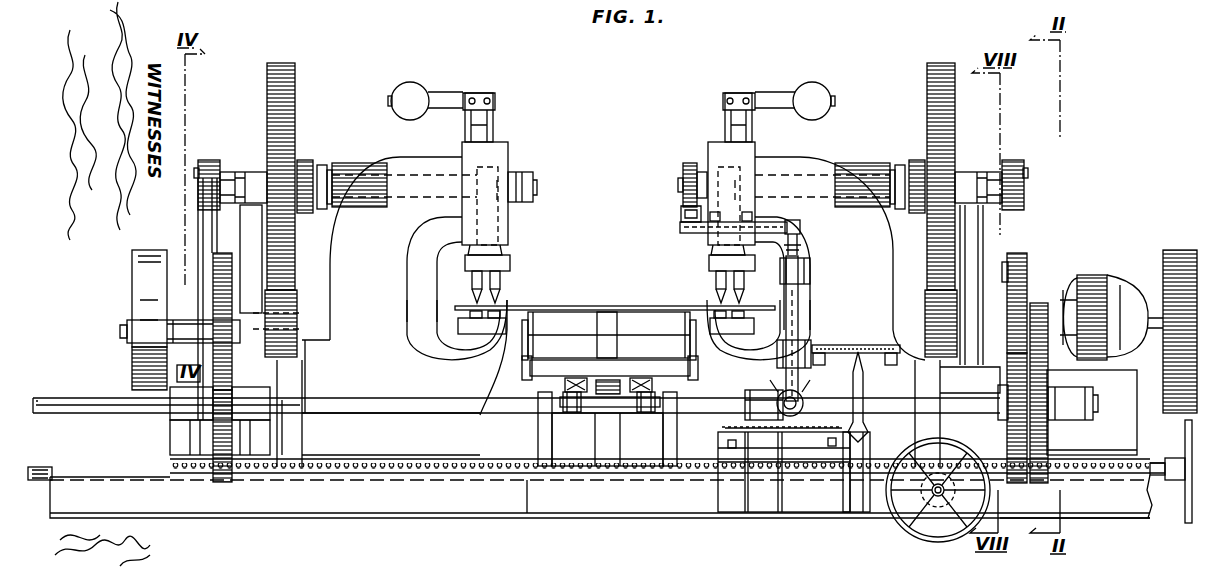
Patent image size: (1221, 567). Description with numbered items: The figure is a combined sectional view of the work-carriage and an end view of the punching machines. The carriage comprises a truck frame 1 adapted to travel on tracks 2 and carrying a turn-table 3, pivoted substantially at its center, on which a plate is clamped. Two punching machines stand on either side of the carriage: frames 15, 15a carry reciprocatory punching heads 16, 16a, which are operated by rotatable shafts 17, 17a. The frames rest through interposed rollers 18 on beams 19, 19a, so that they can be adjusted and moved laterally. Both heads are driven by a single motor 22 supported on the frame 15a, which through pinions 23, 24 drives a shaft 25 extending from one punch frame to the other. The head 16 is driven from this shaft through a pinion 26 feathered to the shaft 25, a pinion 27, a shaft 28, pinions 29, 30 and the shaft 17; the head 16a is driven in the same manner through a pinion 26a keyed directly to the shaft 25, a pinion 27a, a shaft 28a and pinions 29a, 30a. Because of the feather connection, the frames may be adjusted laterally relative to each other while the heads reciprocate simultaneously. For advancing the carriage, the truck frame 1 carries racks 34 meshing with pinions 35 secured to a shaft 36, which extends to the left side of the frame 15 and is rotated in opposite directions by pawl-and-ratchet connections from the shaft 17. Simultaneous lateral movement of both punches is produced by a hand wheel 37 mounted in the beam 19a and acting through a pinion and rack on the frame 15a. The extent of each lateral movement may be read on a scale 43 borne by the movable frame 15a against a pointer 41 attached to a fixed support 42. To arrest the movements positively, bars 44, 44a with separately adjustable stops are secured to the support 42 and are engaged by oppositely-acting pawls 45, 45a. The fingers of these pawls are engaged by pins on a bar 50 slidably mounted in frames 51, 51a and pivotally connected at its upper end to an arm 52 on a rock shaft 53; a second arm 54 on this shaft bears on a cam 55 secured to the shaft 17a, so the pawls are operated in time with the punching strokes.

The truck frame 1 is at (528, 333).
The tracks 2 is at (537, 413).
The turn-table 3 is at (563, 309).
The punch frame 15 is at (508, 153).
The punch frame 15a is at (712, 143).
The punching head 16 is at (510, 264).
The punching head 16a is at (710, 262).
The shaft 17 is at (353, 165).
The shaft 17a is at (791, 170).
The rollers 18 is at (1136, 465).
The beam 19 is at (386, 518).
The beam 19a is at (1125, 518).
The motor 22 is at (1096, 275).
The pinion 23 is at (1040, 303).
The pinion 24 is at (1050, 449).
The shaft 25 is at (391, 398).
The pinion 26 is at (222, 483).
The pinion 26a is at (1013, 483).
The pinion 27 is at (224, 253).
The pinion 27a is at (1030, 264).
The shaft 28 is at (125, 332).
The shaft 28a is at (993, 273).
The pinion 29 is at (291, 318).
The pinion 29a is at (928, 313).
The pinion 30 is at (296, 253).
The pinion 30a is at (927, 128).
The racks 34 is at (574, 378).
The pinions 35 is at (640, 420).
The shaft 36 is at (607, 394).
The hand wheel 37 is at (925, 528).
The pointer 41 is at (862, 396).
The fixed support 42 is at (843, 498).
The scale 43 is at (860, 345).
The bar 44 is at (720, 440).
The bar 44a is at (870, 438).
The pawl 45 is at (778, 397).
The pawl 45a is at (808, 412).
The bar 50 is at (800, 302).
The frame 51 is at (777, 349).
The frame 51a is at (811, 272).
The arm 52 is at (801, 243).
The rock shaft 53 is at (775, 226).
The arm 54 is at (681, 232).
The cam 55 is at (683, 200).